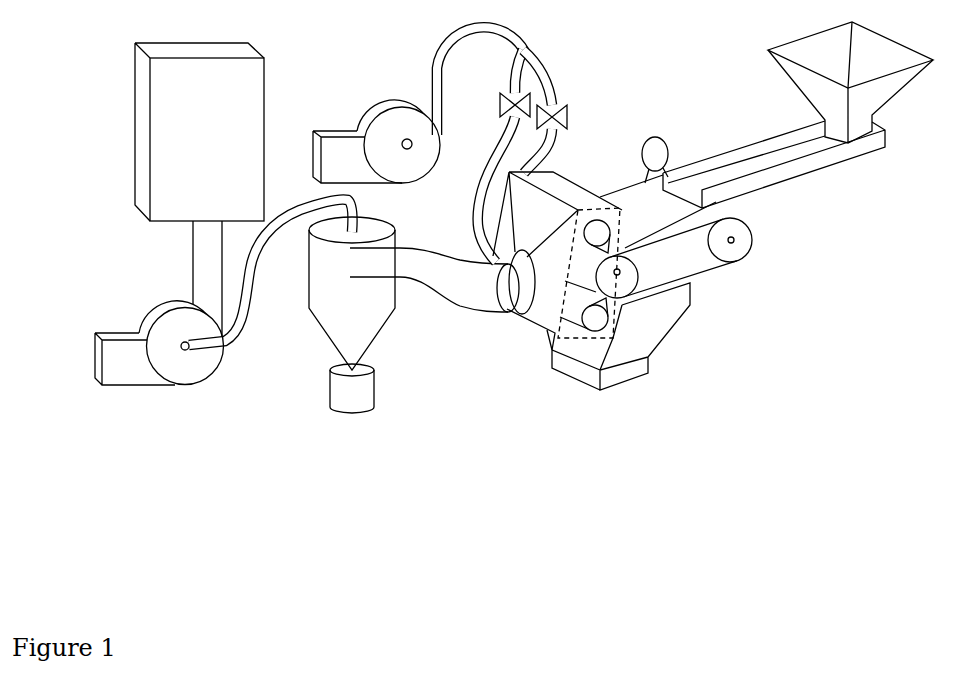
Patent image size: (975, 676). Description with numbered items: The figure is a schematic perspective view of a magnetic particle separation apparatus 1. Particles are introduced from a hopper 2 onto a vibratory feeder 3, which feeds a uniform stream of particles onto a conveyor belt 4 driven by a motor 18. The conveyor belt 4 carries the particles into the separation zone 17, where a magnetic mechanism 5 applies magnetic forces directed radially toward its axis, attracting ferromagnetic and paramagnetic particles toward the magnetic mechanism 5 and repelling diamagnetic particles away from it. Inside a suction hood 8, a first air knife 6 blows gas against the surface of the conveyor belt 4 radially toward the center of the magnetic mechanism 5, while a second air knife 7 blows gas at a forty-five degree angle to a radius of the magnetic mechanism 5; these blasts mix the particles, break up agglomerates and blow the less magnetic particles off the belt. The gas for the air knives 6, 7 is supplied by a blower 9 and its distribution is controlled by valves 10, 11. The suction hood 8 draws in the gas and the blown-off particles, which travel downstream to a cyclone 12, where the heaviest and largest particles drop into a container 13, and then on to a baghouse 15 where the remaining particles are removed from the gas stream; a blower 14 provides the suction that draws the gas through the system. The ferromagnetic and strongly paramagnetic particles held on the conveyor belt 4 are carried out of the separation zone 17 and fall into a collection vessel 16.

The apparatus 1 is at (376, 53).
The hopper 2 is at (850, 82).
The vibratory feeder 3 is at (774, 164).
The conveyor belt 4 is at (658, 211).
The magnetic mechanism 5 is at (674, 258).
The first air knife 6 is at (597, 236).
The second air knife 7 is at (595, 314).
The suction hood 8 is at (557, 261).
The blower 9 is at (419, 105).
The valve 10 is at (556, 111).
The valve 11 is at (504, 156).
The cyclone 12 is at (408, 293).
The container 13 is at (352, 388).
The blower 14 is at (224, 292).
The baghouse 15 is at (199, 189).
The collection vessel 16 is at (618, 336).
The separation zone 17 is at (583, 268).
The motor 18 is at (655, 160).